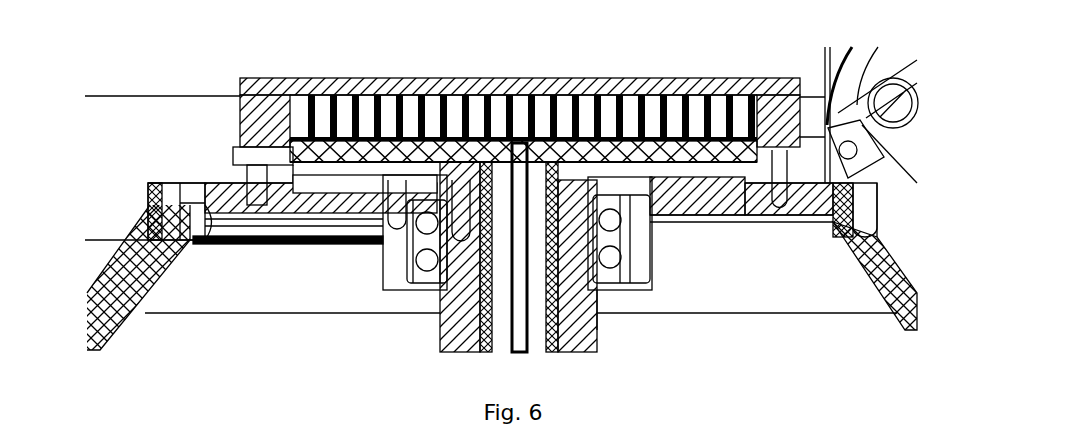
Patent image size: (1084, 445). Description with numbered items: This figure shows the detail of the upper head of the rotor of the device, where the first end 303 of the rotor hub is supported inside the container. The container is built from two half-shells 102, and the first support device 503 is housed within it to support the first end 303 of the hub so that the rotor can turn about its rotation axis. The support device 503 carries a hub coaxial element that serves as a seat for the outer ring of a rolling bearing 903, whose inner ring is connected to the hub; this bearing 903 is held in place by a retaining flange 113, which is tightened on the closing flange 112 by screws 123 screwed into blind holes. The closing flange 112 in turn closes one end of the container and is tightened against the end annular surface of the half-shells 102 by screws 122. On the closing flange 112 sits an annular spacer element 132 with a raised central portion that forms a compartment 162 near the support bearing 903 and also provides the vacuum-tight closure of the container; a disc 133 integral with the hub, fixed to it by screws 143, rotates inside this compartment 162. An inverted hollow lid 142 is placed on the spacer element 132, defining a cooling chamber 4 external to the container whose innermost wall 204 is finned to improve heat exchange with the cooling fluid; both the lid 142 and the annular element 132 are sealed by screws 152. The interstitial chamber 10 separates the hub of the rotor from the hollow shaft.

The cooling chamber 4 is at (400, 96).
The interstitial chamber 10 is at (527, 200).
The half-shell 102 is at (137, 230).
The closing flange 112 is at (208, 183).
The retaining flange 113 is at (365, 185).
The screws 122 is at (170, 183).
The screws 123 is at (660, 140).
The annular spacer element 132 is at (233, 177).
The disc 133 is at (297, 163).
The lid 142 is at (253, 97).
The screws 143 is at (470, 173).
The screws 152 is at (237, 150).
The compartment 162 is at (328, 183).
The innermost wall 204 is at (585, 150).
The first end of the hub 303 is at (575, 297).
The first support device 503 is at (395, 269).
The rolling bearing 903 is at (880, 75).